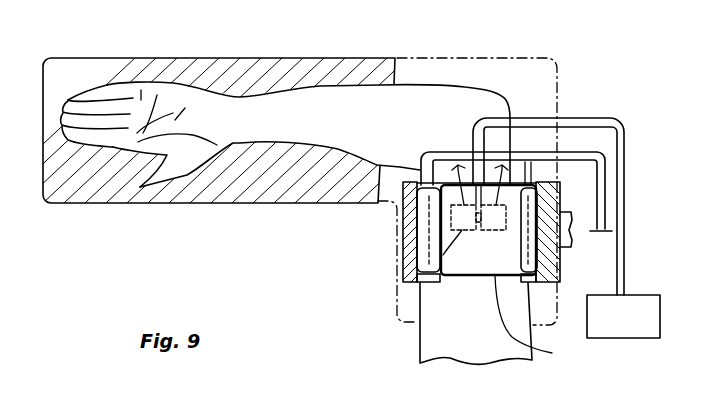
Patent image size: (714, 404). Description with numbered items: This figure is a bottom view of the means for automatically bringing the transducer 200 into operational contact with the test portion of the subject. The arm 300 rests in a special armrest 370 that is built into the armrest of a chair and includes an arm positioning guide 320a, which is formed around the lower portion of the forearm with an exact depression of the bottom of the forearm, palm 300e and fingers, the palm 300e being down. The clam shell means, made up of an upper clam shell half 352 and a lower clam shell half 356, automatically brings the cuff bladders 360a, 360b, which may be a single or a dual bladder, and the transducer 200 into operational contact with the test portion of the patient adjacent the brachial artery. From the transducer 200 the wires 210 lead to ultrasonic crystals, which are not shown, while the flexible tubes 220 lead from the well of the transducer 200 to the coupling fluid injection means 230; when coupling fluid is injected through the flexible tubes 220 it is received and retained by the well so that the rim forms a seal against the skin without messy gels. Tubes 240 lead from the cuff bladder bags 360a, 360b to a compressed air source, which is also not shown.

The armrest 370 is at (87, 58).
The arm positioning guide 320a is at (225, 72).
The arm 300 is at (361, 92).
The palm 300e is at (137, 157).
The wires 210 is at (455, 164).
The flexible tubes 220 is at (618, 130).
The tubes 240 is at (607, 196).
The coupling fluid injection means 230 is at (623, 316).
The lower clam shell half 356 is at (547, 265).
The upper clam shell half 352 is at (427, 232).
The cuff bladder 360b is at (425, 215).
The cuff bladder 360a is at (510, 322).
The transducer 200 is at (416, 270).